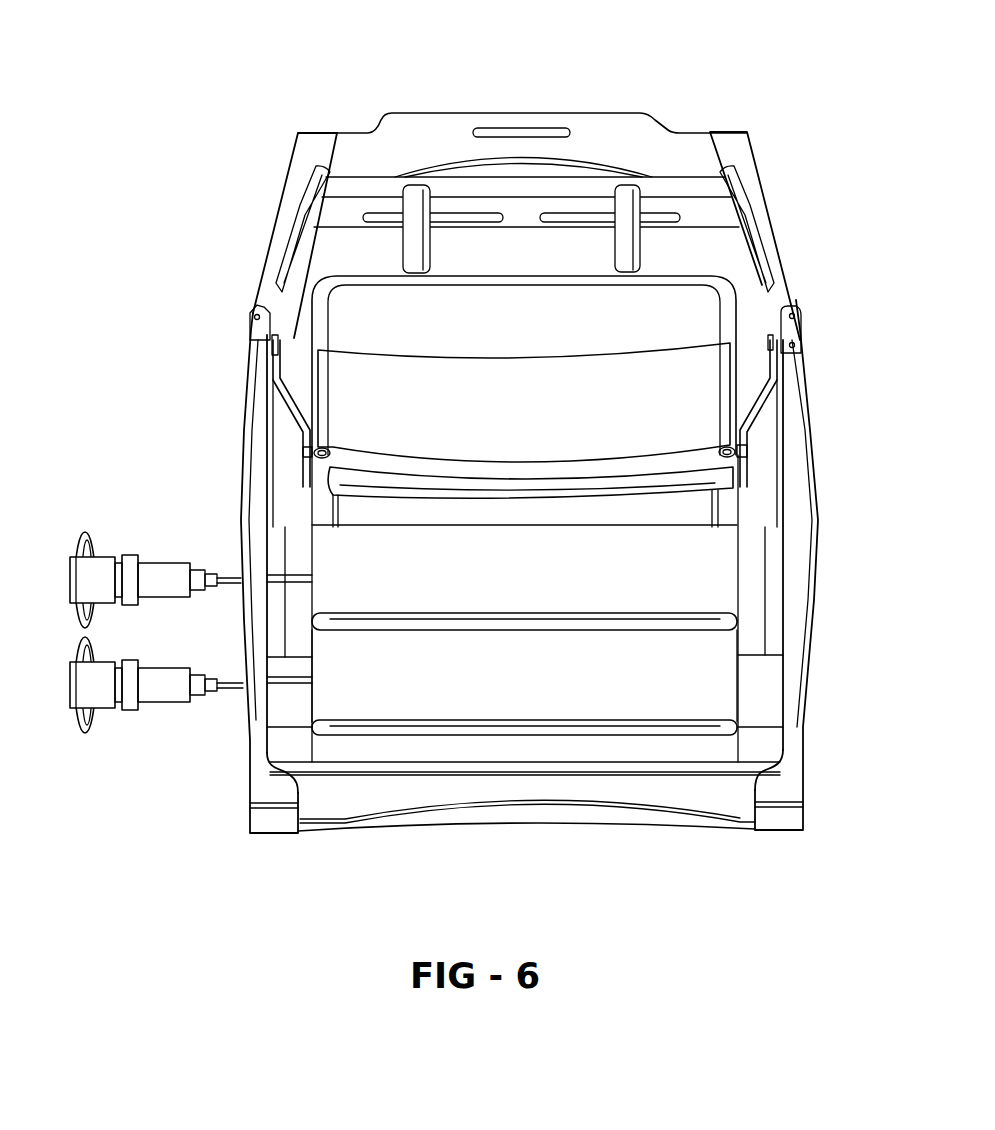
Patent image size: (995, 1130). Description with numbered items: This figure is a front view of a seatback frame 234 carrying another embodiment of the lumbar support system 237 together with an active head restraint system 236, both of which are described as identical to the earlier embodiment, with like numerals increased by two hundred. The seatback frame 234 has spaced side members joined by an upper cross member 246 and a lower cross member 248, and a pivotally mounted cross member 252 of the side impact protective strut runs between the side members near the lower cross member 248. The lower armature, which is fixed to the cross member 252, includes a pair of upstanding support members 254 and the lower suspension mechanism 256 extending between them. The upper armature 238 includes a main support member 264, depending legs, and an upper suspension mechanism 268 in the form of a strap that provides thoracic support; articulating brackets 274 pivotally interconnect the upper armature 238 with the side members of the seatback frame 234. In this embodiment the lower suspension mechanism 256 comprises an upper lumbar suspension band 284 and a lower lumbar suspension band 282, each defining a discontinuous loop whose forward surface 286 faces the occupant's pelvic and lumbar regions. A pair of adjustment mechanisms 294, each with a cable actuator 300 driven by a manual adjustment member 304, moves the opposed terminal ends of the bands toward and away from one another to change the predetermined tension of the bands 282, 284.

The seatback frame 234 is at (778, 143).
The active head restraint system 236 is at (707, 252).
The lumbar support system 237 is at (822, 663).
The upper armature 238 is at (308, 294).
The upper cross member 246 is at (557, 128).
The lower cross member 248 is at (605, 828).
The cross member 252 is at (637, 760).
The upstanding support members 254 is at (333, 508).
The lower suspension mechanism 256 is at (310, 537).
The main support member 264 is at (512, 281).
The upper suspension mechanism 268 is at (509, 372).
The articulating brackets 274 is at (757, 397).
The lower lumbar suspension band 282 is at (745, 698).
The upper lumbar suspension band 284 is at (744, 559).
The forward surface 286 is at (545, 547).
The adjustment mechanisms 294 is at (100, 613).
The cable actuator 300 is at (167, 572).
The manual adjustment member 304 is at (87, 532).